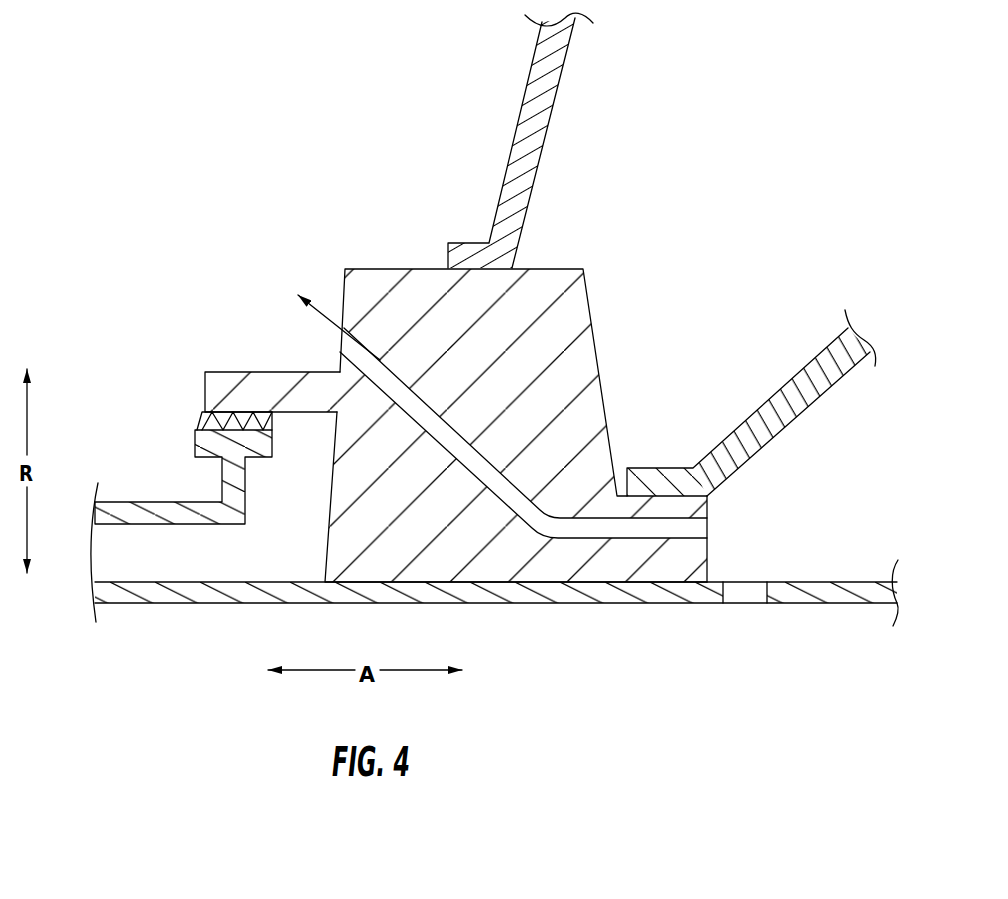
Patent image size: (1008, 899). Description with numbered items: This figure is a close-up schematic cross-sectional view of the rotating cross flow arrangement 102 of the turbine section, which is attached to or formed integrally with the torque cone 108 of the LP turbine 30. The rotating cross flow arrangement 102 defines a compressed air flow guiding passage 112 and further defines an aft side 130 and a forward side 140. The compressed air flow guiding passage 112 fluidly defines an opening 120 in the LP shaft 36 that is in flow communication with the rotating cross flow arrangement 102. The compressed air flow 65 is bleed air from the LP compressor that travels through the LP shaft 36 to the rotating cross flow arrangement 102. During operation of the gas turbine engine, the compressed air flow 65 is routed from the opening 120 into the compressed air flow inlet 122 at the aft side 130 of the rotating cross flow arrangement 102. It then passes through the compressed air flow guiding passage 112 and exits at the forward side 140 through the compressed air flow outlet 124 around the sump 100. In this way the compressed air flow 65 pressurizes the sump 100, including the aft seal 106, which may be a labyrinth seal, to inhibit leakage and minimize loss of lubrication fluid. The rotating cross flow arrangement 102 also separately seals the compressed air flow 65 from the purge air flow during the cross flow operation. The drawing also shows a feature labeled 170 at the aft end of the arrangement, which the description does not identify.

The LP turbine 30 is at (782, 240).
The LP shaft 36 is at (818, 605).
The compressed air flow 65 is at (352, 347).
The sump 100 is at (105, 325).
The rotating cross flow arrangement 102 is at (513, 430).
The aft seal 106 is at (192, 420).
The torque cone 108 is at (547, 125).
The compressed air flow guiding passage 112 is at (539, 527).
The opening 120 is at (767, 616).
The compressed air flow inlet 122 is at (722, 518).
The compressed air flow outlet 124 is at (324, 290).
The aft side 130 is at (630, 412).
The forward side 140 is at (288, 346).
The outlet 170 is at (783, 552).